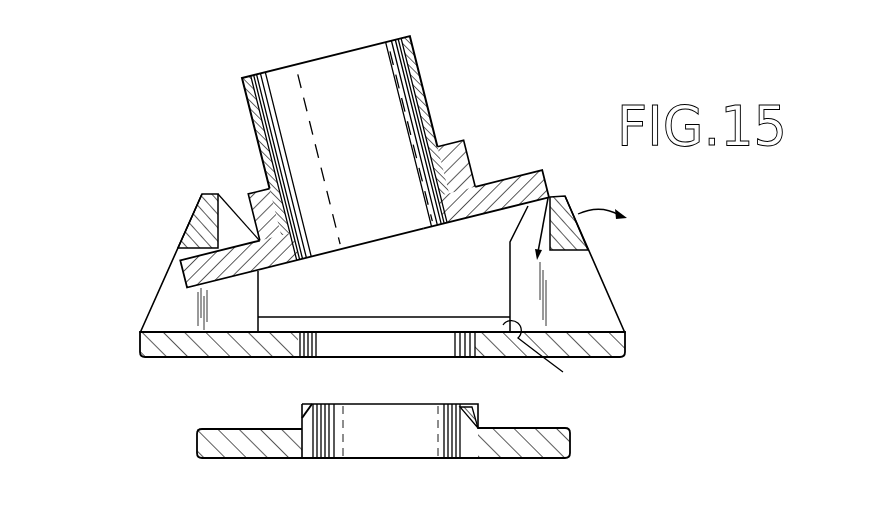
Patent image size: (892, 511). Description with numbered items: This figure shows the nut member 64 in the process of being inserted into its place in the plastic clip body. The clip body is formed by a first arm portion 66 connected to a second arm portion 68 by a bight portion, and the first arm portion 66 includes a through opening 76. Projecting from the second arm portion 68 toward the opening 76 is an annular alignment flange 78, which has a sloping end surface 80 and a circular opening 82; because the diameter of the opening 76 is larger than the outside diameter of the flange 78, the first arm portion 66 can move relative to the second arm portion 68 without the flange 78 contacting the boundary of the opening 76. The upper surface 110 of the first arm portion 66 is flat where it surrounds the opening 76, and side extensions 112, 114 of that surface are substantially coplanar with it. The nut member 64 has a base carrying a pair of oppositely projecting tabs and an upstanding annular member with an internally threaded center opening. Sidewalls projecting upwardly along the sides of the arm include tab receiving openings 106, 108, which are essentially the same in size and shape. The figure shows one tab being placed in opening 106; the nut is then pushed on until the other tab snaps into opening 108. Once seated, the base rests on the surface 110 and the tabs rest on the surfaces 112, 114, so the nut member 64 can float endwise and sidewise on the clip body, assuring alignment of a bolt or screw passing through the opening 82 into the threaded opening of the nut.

The metal nut member 64 is at (345, 150).
The first arm portion 66 is at (197, 217).
The second arm portion 68 is at (333, 418).
The through opening 76 is at (393, 343).
The annular alignment flange 78 is at (300, 418).
The sloping end surface 80 is at (422, 407).
The circular opening 82 is at (370, 420).
The tab receiving opening 106 is at (371, 280).
The tab receiving opening 108 is at (525, 280).
The upper surface 110 is at (548, 357).
The side extension 112 is at (371, 331).
The side extension 114 is at (587, 333).